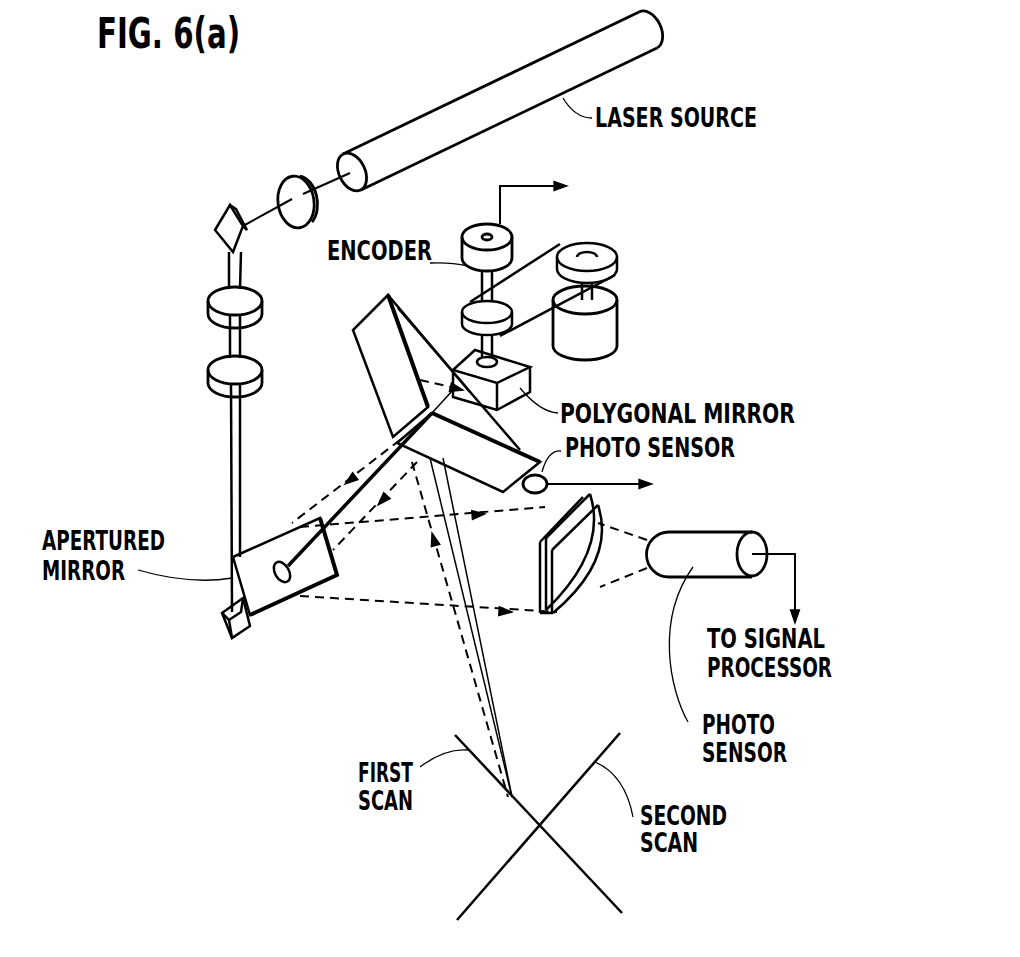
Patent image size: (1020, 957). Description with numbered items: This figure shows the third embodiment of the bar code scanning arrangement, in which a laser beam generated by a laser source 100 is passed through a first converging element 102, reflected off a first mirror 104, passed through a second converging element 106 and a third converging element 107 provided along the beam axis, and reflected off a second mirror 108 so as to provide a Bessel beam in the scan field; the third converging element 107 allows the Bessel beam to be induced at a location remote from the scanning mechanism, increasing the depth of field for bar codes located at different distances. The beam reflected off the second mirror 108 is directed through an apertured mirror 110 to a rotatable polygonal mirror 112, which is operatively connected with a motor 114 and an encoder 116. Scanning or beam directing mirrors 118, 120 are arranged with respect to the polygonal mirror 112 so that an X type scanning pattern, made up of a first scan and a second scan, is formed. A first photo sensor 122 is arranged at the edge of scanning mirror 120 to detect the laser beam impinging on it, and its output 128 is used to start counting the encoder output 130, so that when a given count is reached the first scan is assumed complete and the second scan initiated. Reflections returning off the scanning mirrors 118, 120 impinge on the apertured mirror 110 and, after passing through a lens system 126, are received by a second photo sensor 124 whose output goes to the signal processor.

The laser source 100 is at (489, 85).
The first converging element 102 is at (287, 177).
The first mirror 104 is at (222, 224).
The second converging element 106 is at (212, 305).
The third converging element 107 is at (212, 372).
The second mirror 108 is at (222, 628).
The apertured mirror 110 is at (262, 593).
The rotatable polygonal mirror 112 is at (522, 386).
The motor 114 is at (610, 334).
The encoder 116 is at (467, 265).
The scanning mirror 118 is at (373, 340).
The scanning mirror 120 is at (408, 436).
The first photo sensor 122 is at (527, 490).
The second photo sensor 124 is at (713, 540).
The lens system 126 is at (567, 614).
The output of the first photo sensor 128 is at (678, 484).
The encoder output 130 is at (622, 190).